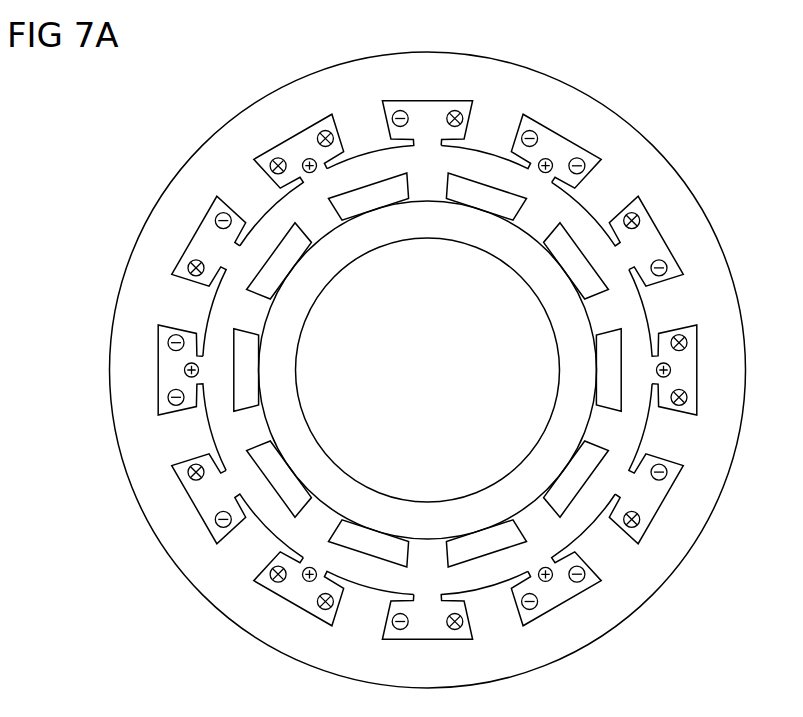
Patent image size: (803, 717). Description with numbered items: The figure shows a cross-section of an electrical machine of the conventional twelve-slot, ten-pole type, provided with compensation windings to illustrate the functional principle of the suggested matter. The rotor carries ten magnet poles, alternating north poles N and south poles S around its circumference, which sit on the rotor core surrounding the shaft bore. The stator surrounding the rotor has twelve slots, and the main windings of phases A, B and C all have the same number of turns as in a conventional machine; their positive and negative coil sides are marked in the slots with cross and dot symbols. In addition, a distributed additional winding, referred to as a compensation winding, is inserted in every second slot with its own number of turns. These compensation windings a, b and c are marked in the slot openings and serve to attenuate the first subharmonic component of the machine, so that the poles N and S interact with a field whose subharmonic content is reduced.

The north pole N is at (434, 370).
The south pole S is at (421, 370).